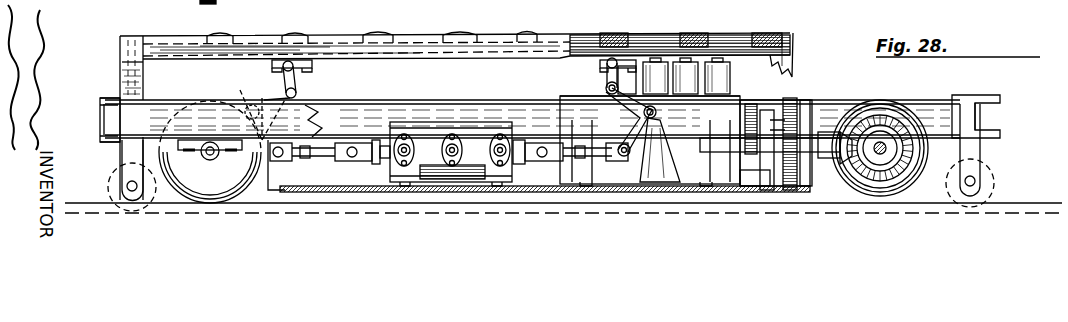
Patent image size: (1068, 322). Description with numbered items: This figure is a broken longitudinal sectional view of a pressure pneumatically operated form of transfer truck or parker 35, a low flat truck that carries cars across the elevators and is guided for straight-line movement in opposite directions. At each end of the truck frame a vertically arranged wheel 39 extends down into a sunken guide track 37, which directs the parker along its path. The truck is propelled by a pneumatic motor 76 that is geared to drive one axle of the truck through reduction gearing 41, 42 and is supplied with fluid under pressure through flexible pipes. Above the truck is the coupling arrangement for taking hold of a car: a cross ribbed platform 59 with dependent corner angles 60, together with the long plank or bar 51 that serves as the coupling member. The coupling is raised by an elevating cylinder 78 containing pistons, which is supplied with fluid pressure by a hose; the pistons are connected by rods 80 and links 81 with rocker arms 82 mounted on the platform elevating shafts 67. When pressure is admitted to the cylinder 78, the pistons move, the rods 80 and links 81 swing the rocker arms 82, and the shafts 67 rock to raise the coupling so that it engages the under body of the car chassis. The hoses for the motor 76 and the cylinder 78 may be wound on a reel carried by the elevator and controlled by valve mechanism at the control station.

The transfer truck 35 is at (1013, 106).
The sunken guide track 37 is at (330, 210).
The wheel 39 is at (118, 182).
The reduction gearing 41 is at (796, 112).
The reduction gearing 42 is at (886, 118).
The plank or bar 51 is at (735, 46).
The cross ribbed platform 59 is at (690, 38).
The dependent corner angle 60 is at (130, 72).
The shaft 67 is at (258, 108).
The pneumatic motor 76 is at (720, 78).
The cylinder 78 is at (440, 120).
The rod 80 is at (372, 162).
The link 81 is at (320, 160).
The rocker arm 82 is at (282, 140).